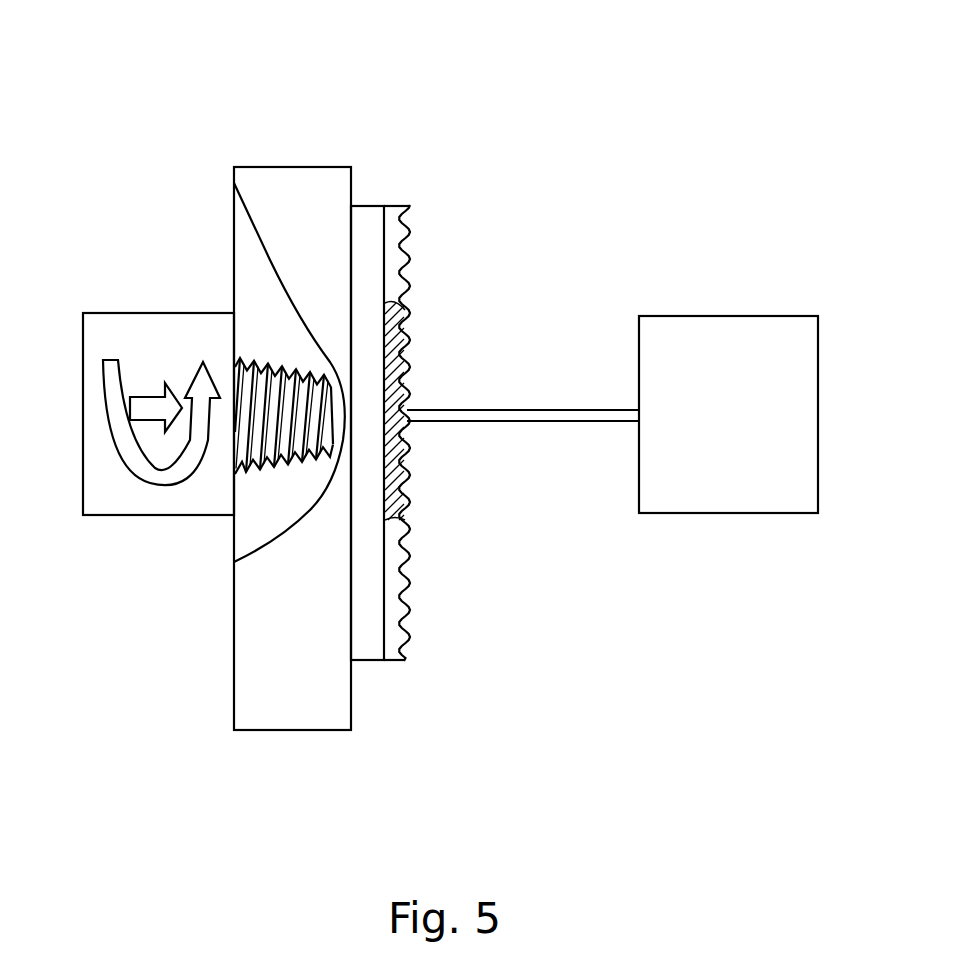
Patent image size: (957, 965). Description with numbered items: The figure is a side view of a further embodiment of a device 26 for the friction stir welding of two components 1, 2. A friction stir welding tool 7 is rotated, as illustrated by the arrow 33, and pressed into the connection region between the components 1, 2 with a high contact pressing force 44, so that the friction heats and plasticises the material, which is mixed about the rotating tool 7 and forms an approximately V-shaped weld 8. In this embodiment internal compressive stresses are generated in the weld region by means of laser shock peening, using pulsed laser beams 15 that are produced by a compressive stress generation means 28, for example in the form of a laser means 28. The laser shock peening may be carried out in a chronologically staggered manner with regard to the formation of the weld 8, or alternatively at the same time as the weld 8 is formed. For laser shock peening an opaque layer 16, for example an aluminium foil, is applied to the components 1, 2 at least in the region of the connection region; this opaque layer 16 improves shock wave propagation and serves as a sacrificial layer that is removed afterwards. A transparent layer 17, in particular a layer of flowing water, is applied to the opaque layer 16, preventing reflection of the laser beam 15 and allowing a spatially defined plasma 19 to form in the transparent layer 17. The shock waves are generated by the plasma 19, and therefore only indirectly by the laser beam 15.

The device 26 is at (128, 85).
The component 1 is at (272, 720).
The component 2 is at (275, 183).
The weld 8 is at (245, 266).
The friction stir welding tool 7 is at (122, 545).
The contact pressing force 44 is at (188, 455).
The arrow 33 is at (110, 381).
The opaque layer 16 is at (370, 647).
The transparent layer 17 is at (393, 215).
The plasma 19 is at (390, 490).
The pulsed laser beam 15 is at (560, 412).
The compressive stress generation means 28 is at (727, 328).